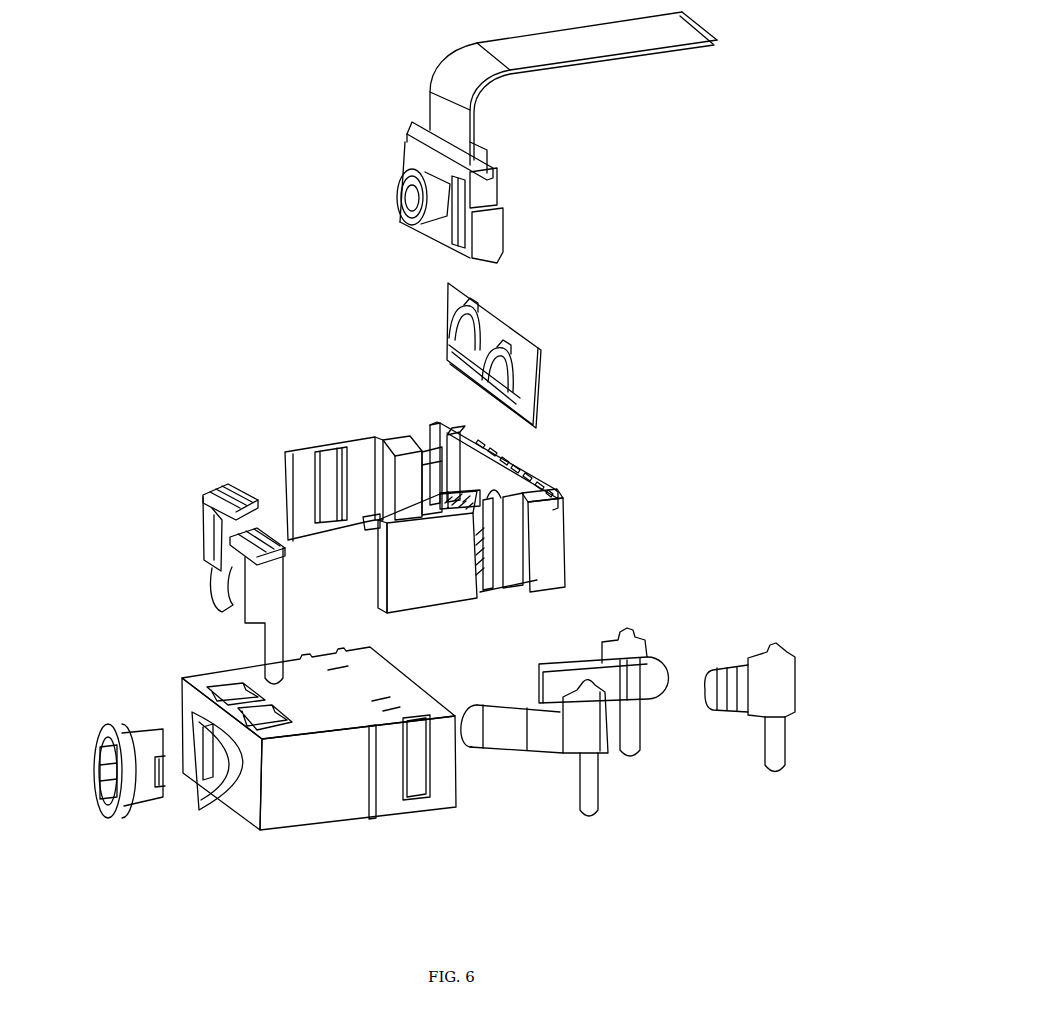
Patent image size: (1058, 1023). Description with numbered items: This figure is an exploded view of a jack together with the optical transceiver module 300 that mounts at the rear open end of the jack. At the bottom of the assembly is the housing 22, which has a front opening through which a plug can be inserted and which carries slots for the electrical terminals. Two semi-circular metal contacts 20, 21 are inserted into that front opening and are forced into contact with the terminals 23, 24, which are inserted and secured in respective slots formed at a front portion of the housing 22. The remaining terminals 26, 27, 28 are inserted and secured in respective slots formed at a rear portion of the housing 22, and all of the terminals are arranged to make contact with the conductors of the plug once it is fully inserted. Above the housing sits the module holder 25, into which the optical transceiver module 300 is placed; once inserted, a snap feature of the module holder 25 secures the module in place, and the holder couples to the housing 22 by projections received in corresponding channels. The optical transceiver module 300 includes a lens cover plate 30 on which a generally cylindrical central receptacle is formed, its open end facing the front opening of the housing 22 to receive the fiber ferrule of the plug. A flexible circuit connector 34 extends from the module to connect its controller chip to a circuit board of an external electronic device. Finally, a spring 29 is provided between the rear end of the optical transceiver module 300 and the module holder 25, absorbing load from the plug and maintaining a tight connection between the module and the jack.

The optical transceiver module 300 is at (288, 92).
The flexible circuit connector 34 is at (607, 30).
The lens cover plate 30 is at (407, 143).
The spring 29 is at (540, 373).
The module holder 25 is at (567, 543).
The terminal 23 is at (200, 520).
The terminal 24 is at (250, 593).
The housing 22 is at (312, 822).
The semi-circular metal contact 21 is at (97, 720).
The semi-circular metal contact 20 is at (134, 818).
The terminal 28 is at (650, 643).
The terminal 26 is at (602, 790).
The terminal 27 is at (797, 683).